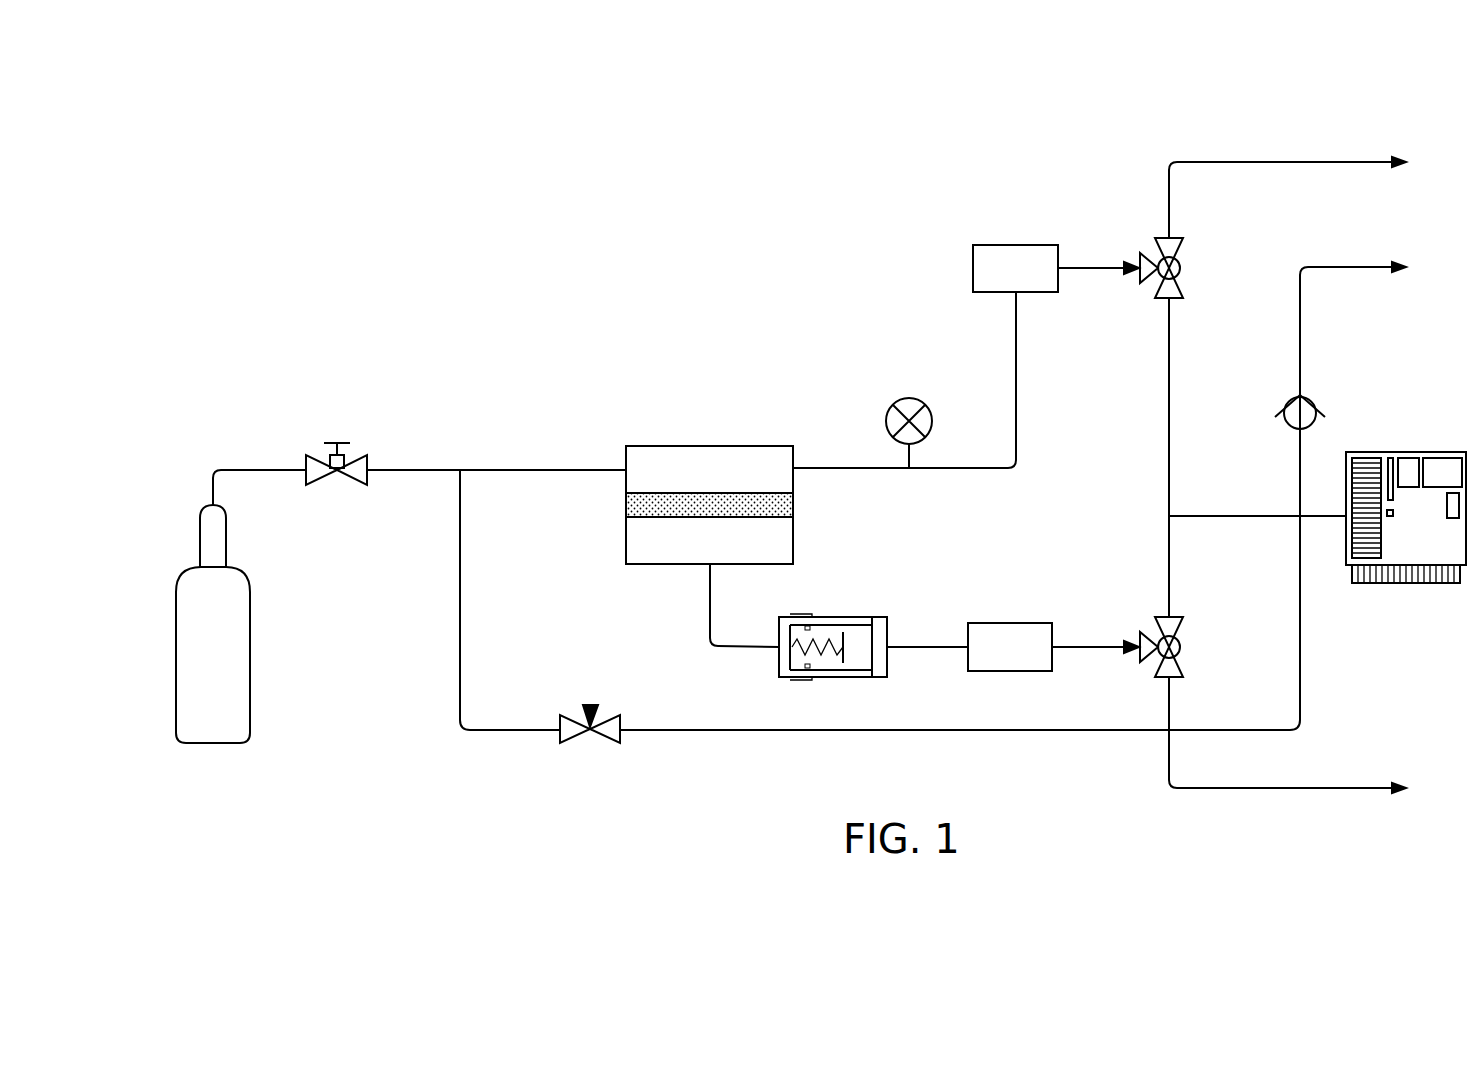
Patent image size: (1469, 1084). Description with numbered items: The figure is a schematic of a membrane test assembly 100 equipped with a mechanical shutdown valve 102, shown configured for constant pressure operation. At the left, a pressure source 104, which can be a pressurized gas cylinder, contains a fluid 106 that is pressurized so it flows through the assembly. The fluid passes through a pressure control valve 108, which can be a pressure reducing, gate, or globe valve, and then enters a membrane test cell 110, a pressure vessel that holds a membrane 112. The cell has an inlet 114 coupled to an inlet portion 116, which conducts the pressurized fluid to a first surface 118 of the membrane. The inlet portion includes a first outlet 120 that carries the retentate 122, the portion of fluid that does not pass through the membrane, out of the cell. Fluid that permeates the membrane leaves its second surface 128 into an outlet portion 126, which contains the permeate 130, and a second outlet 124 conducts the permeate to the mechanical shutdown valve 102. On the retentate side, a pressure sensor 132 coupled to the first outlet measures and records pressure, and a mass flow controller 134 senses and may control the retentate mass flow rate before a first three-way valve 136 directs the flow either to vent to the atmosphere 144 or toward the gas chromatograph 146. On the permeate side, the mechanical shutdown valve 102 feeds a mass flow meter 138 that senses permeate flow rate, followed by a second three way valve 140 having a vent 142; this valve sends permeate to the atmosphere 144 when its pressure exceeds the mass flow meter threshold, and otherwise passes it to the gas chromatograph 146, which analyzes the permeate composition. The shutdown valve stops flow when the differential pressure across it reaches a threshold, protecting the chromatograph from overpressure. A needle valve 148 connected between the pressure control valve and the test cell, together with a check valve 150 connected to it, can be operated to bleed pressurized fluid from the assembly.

The membrane test assembly 100 is at (378, 188).
The mechanical shutdown valve 102 is at (903, 594).
The pressure source 104 is at (176, 667).
The fluid 106 is at (237, 675).
The pressure control valve 108 is at (305, 463).
The membrane test cell 110 is at (698, 501).
The membrane 112 is at (628, 504).
The inlet 114 is at (612, 450).
The inlet portion 116 is at (713, 446).
The first surface 118 is at (668, 492).
The first outlet 120 is at (810, 452).
The retentate 122 is at (772, 458).
The second outlet 124 is at (697, 582).
The outlet portion 126 is at (641, 568).
The second surface 128 is at (780, 520).
The permeate 130 is at (632, 542).
The pressure sensor 132 is at (922, 398).
The mass flow controller 134 is at (1028, 245).
The first three-way valve 136 is at (1190, 255).
The mass flow meter 138 is at (1010, 623).
The second three way valve 140 is at (1188, 662).
The vent 142 is at (1290, 790).
The atmosphere 144 is at (1465, 806).
The gas chromatograph 146 is at (1405, 452).
The needle valve 148 is at (607, 742).
The check valve 150 is at (1313, 402).